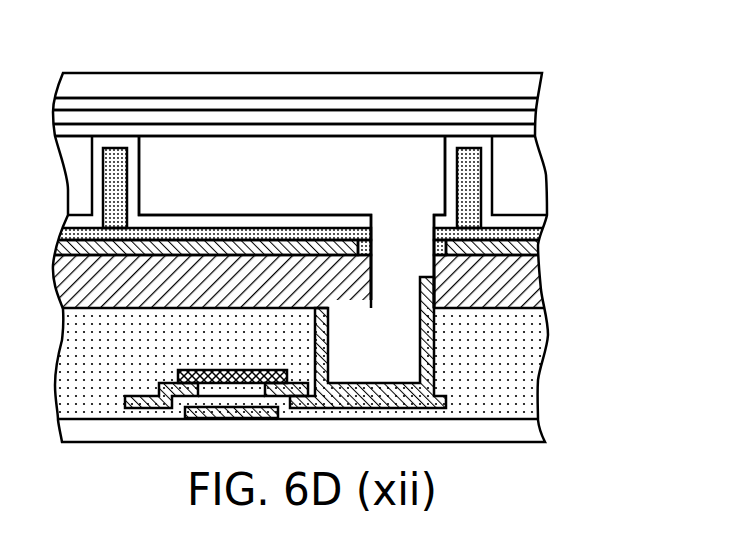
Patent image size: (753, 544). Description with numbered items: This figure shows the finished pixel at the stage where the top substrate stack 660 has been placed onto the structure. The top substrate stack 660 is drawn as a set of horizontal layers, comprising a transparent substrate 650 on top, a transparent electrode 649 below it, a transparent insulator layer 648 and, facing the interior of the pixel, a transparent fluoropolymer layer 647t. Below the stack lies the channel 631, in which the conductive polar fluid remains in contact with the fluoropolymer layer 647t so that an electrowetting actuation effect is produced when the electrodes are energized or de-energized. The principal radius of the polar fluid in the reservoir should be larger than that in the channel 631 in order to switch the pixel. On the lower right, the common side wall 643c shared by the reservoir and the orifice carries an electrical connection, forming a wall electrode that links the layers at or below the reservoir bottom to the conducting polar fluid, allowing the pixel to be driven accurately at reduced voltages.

The transparent substrate 650 is at (142, 83).
The transparent electrode 649 is at (207, 103).
The channel 631 is at (303, 172).
The transparent insulator layer 648 is at (365, 118).
The transparent fluoropolymer layer 647t is at (435, 131).
The top substrate stack 660 is at (549, 67).
The common side wall 643c is at (417, 312).